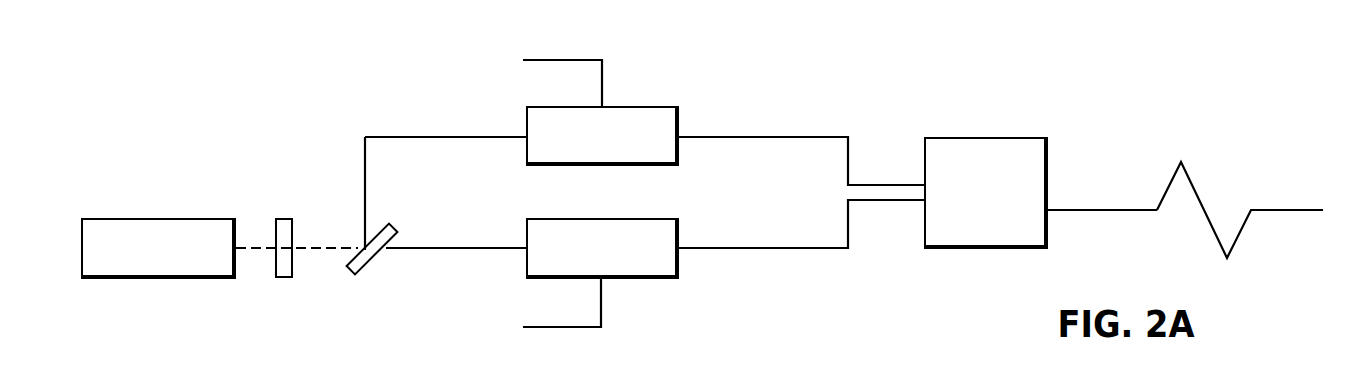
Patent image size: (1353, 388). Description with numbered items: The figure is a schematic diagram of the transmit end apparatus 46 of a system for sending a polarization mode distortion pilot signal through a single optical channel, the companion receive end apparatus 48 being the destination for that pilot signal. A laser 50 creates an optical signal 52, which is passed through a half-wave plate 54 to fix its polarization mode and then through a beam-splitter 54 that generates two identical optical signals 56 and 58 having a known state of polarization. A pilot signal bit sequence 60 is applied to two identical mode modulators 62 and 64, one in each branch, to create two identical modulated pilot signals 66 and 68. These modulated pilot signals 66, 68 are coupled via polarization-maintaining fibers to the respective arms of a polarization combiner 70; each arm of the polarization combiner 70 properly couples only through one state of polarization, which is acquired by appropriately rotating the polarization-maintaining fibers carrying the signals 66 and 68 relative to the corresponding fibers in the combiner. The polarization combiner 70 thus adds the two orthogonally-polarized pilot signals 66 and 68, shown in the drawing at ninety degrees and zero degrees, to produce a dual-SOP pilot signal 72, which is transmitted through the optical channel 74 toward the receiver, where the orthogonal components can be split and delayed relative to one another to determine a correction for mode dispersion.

The transmit end apparatus 46 is at (364, 84).
The receive end apparatus 48 is at (314, 318).
The laser 50 is at (108, 219).
The optical signal 52 is at (278, 278).
The half-wave plate 54 is at (353, 282).
The optical signal 56 is at (413, 137).
The optical signal 58 is at (413, 248).
The pilot signal bit sequence 60 is at (543, 197).
The mode modulator 62 is at (630, 107).
The mode modulator 64 is at (632, 280).
The modulated pilot signal 66 is at (715, 140).
The modulated pilot signal 68 is at (715, 252).
The polarization combiner 70 is at (967, 137).
The dual-SOP pilot signal 72 is at (1083, 210).
The optical channel 74 is at (1287, 178).